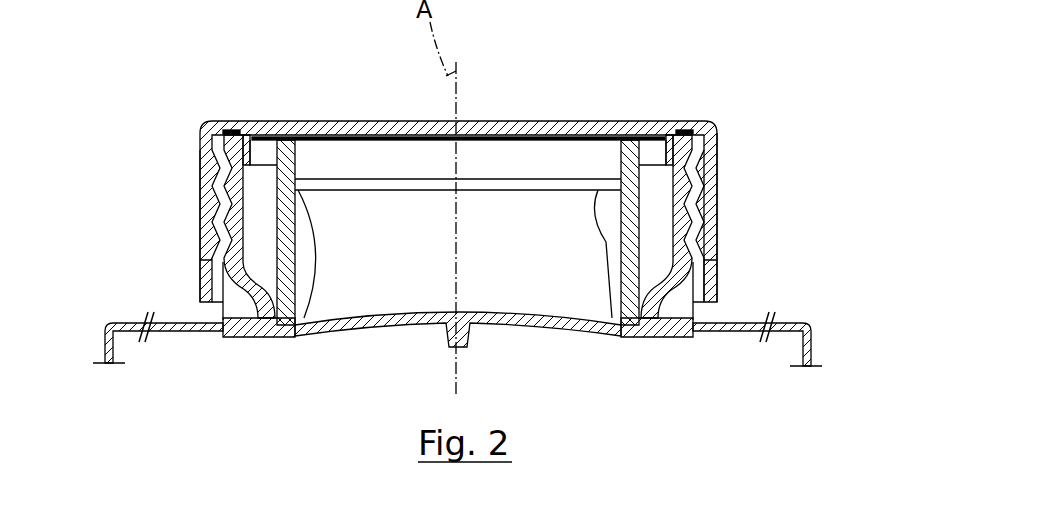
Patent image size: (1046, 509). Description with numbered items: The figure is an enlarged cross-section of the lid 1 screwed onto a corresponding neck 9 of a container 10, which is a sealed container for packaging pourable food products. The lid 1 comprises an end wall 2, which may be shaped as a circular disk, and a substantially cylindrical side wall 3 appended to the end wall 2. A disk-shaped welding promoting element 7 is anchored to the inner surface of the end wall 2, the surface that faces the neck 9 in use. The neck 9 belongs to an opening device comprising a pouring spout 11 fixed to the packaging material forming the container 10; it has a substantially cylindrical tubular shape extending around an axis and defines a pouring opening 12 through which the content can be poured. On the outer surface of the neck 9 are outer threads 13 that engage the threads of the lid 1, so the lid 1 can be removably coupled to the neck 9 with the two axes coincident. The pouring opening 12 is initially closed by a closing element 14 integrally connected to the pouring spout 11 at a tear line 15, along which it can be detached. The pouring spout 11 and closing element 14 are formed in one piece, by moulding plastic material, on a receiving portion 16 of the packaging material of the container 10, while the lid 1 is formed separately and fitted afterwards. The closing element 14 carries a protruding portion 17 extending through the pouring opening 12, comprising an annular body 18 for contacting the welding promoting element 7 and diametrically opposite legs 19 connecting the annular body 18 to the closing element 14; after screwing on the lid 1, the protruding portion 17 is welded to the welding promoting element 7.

The lid 1 is at (768, 82).
The end wall 2 is at (366, 121).
The side wall 3 is at (718, 178).
The welding promoting element 7 is at (522, 140).
The neck 9 is at (224, 228).
The container 10 is at (796, 322).
The pouring spout 11 is at (258, 185).
The pouring opening 12 is at (497, 223).
The outer threads 13 is at (690, 143).
The closing element 14 is at (383, 332).
The tear line 15 is at (272, 337).
The receiving portion 16 is at (748, 322).
The protruding portion 17 is at (598, 190).
The annular body 18 is at (334, 158).
The legs 19 is at (716, 232).